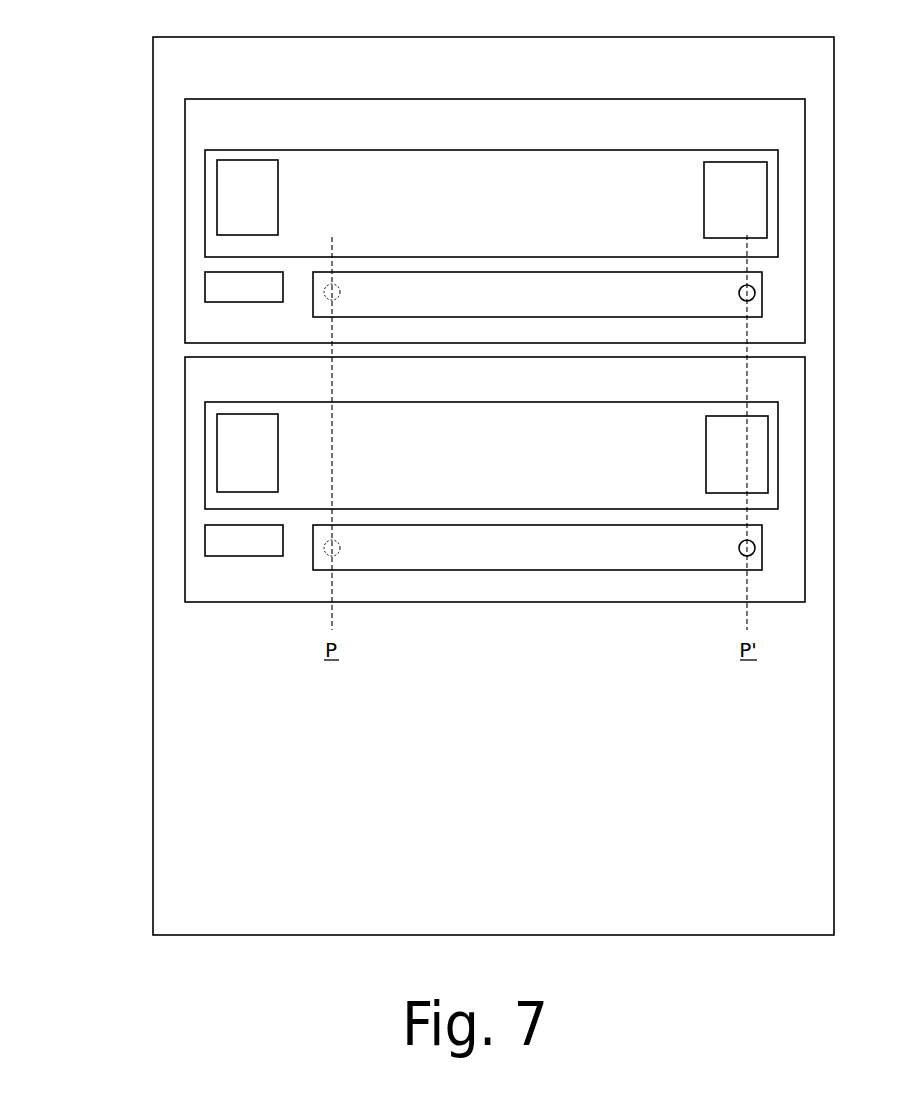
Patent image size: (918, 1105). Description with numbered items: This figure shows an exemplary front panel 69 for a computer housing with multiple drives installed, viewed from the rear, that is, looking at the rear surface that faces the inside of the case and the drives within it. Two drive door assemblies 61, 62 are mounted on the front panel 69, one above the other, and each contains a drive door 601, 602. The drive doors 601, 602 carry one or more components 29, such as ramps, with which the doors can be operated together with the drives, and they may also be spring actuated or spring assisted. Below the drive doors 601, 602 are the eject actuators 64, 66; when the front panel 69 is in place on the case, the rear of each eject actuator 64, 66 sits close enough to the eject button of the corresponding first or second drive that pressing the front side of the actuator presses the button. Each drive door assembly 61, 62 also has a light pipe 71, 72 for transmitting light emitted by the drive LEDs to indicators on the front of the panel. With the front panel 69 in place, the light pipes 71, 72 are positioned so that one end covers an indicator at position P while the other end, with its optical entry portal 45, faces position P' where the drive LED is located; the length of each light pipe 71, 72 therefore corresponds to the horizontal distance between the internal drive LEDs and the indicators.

The front panel 69 is at (313, 68).
The drive door assembly 61 is at (470, 128).
The drive door assembly 62 is at (470, 386).
The drive door 601 is at (527, 179).
The drive door 602 is at (527, 431).
The component 29 is at (258, 190).
The eject actuator 64 is at (237, 290).
The eject actuator 66 is at (215, 538).
The light pipe 71 is at (600, 301).
The light pipe 72 is at (600, 556).
The optical entry portal 45 is at (758, 298).